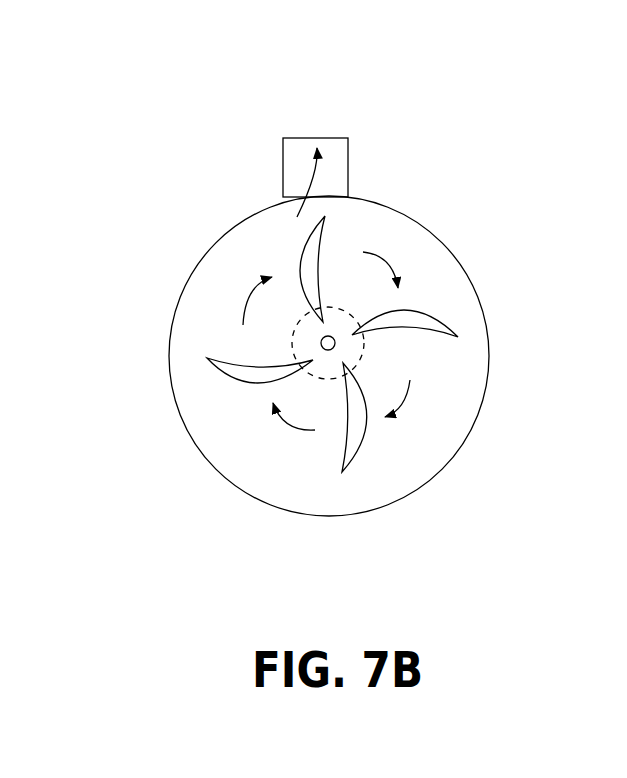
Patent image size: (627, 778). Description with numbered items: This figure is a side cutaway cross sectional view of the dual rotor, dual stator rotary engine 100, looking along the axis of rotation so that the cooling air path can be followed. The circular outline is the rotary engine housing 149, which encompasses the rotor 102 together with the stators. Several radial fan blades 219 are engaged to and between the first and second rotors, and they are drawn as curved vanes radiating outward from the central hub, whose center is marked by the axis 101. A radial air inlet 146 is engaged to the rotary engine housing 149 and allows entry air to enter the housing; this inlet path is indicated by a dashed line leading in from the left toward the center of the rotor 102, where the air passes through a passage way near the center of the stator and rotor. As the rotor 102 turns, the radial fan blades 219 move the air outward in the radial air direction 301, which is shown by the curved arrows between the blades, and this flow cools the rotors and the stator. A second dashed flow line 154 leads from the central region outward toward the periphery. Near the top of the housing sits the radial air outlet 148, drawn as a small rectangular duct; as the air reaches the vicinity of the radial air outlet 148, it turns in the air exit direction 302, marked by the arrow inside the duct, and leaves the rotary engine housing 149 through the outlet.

The rotary engine 100 is at (485, 313).
The rotation axis 101 is at (335, 338).
The rotor 102 is at (225, 278).
The radial air inlet 146 is at (293, 337).
The radial air outlet 148 is at (348, 157).
The rotary engine housing 149 is at (235, 222).
The outlet flow path 154 is at (363, 348).
The radial fan blades 219 is at (328, 233).
The radial air direction 301 is at (407, 402).
The air exit direction 302 is at (302, 180).